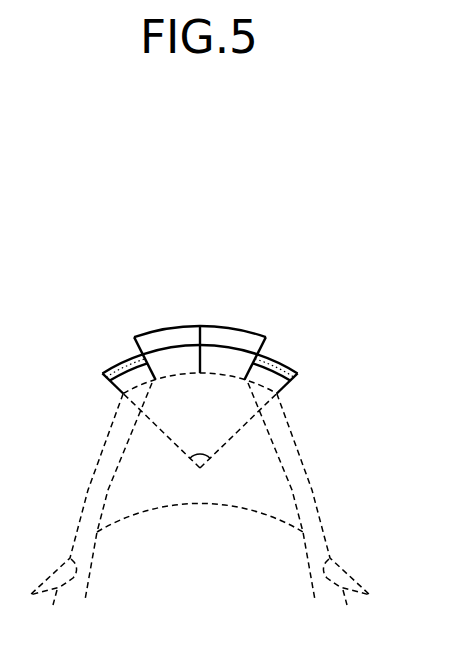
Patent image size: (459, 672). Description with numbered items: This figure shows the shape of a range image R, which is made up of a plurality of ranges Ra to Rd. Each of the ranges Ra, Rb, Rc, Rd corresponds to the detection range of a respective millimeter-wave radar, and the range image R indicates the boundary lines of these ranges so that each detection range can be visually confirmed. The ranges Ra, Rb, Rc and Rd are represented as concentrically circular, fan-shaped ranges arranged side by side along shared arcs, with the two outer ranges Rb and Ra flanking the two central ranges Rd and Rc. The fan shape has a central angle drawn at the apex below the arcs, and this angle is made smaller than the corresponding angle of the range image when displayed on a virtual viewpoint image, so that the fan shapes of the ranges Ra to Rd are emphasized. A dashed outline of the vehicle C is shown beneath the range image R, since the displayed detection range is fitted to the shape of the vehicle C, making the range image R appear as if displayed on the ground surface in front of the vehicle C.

The range image R is at (337, 172).
The range Ra is at (283, 362).
The range Rb is at (119, 362).
The range Rc is at (228, 328).
The range Rd is at (175, 328).
The vehicle C is at (318, 513).